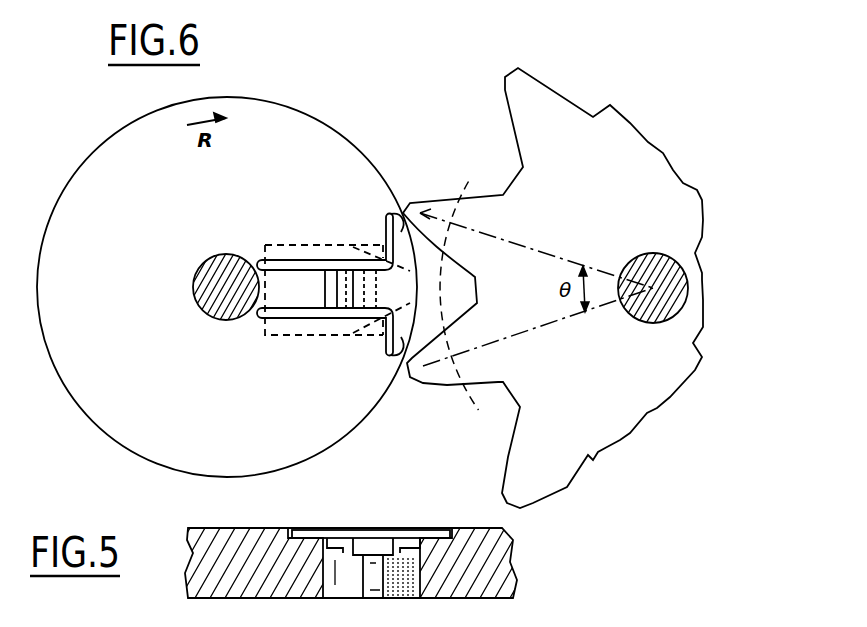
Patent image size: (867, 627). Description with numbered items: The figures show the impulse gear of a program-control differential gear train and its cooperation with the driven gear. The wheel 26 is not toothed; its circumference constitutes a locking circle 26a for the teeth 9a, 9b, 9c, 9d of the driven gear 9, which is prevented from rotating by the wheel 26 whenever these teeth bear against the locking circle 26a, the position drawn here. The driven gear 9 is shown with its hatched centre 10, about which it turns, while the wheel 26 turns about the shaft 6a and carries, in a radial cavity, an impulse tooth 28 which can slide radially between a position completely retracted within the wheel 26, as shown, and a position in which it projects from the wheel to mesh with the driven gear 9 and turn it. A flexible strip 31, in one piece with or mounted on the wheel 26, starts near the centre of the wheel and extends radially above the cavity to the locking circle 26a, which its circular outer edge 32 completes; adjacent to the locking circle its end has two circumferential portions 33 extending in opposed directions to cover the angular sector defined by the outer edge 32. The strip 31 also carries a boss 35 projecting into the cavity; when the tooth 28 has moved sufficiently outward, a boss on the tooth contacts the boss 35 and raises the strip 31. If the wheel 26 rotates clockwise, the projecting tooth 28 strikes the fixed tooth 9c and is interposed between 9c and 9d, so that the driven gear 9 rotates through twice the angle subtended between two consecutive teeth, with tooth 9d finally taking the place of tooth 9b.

In FIG. 6, the driven gear 9 is at (583, 76).
In FIG. 6, the tooth 9a is at (508, 457).
In FIG. 6, the tooth 9b is at (438, 380).
In FIG. 6, the fixed tooth 9c is at (438, 205).
In FIG. 6, the tooth 9d is at (513, 98).
In FIG. 6, the cam pivot hole 10 is at (651, 252).
In FIG. 6, the wheel 26 is at (103, 214).
In FIG. 5, the wheel 26 is at (472, 528).
In FIG. 6, the locking circle 26a is at (324, 121).
In FIG. 6, the shaft 6a is at (232, 256).
In FIG. 6, the impulse tooth 28 is at (293, 315).
In FIG. 5, the impulse tooth 28 is at (347, 570).
In FIG. 6, the flexible strip 31 is at (305, 293).
In FIG. 5, the flexible strip 31 is at (340, 533).
In FIG. 6, the circular outer edge 32 is at (418, 272).
In FIG. 6, the circumferential portions 33 is at (387, 212).
In FIG. 5, the boss 35 is at (376, 540).